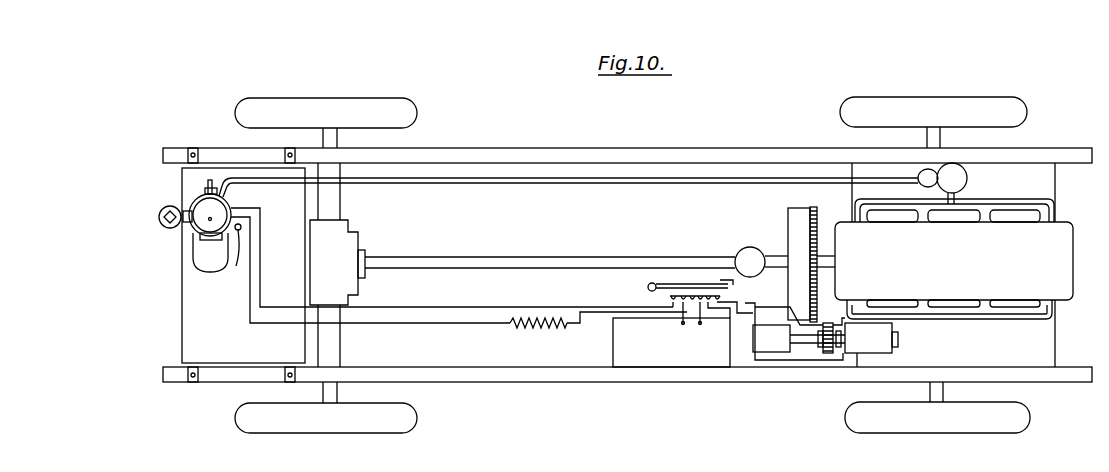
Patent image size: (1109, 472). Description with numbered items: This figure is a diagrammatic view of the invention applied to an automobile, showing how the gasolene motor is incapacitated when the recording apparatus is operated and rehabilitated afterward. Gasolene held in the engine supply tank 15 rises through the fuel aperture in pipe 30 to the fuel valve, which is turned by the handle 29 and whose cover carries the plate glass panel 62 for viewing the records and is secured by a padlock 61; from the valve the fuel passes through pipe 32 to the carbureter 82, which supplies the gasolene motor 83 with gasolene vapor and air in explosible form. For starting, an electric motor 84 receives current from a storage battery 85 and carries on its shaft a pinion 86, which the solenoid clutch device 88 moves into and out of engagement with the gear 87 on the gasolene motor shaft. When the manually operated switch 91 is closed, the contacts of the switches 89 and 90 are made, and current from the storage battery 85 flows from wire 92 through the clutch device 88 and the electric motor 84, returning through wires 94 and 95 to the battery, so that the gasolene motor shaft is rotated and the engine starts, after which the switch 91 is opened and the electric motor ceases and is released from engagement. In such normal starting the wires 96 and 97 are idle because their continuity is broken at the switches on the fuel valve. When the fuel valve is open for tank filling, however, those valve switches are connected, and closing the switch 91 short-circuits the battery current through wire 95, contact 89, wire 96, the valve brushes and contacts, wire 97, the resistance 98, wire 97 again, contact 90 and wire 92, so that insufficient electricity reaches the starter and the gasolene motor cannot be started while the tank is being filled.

The engine supply tank 15 is at (243, 265).
The handle 29 is at (235, 253).
The pipe 30 is at (212, 188).
The pipe 32 is at (452, 184).
The padlock 61 is at (207, 192).
The plate glass panel 62 is at (195, 233).
The carbureter 82 is at (942, 183).
The gasolene motor 83 is at (954, 259).
The electric motor 84 is at (871, 338).
The storage battery 85 is at (671, 342).
The pinion 86 is at (829, 356).
The gear 87 is at (813, 207).
The solenoid clutch device 88 is at (799, 338).
The switch contact 89 is at (648, 289).
The switch contact 90 is at (717, 293).
The manually operated switch 91 is at (694, 283).
The wire 92 is at (702, 326).
The wire 94 is at (802, 362).
The wire 95 is at (680, 326).
The wire 96 is at (261, 214).
The wire 97 is at (250, 289).
The resistance 98 is at (547, 327).